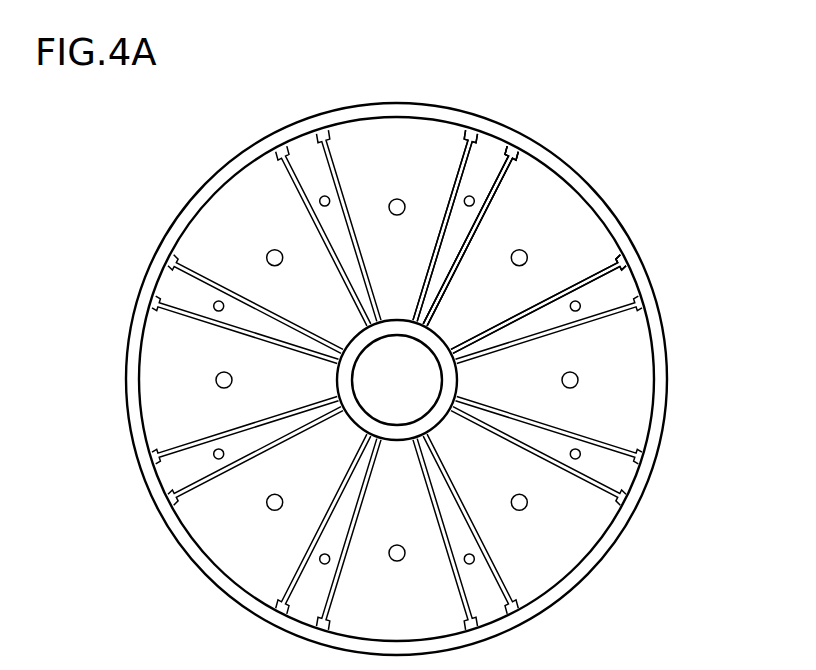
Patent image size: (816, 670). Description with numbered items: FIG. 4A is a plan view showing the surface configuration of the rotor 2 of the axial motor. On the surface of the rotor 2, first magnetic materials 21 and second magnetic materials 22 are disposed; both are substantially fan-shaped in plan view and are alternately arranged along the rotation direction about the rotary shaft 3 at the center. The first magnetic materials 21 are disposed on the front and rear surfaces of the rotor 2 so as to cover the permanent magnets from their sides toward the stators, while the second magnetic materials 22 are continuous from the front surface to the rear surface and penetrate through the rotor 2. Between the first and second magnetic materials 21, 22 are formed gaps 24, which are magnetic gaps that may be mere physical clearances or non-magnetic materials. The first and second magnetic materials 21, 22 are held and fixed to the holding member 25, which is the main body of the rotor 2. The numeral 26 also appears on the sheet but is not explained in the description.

The rotor 2 is at (438, 97).
The rotary shaft 3 is at (407, 372).
The first magnetic material 21 is at (573, 212).
The second magnetic material 22 is at (488, 158).
The gap 24 is at (466, 146).
The holding member 25 is at (625, 257).
The outer ring portion 26 is at (581, 664).